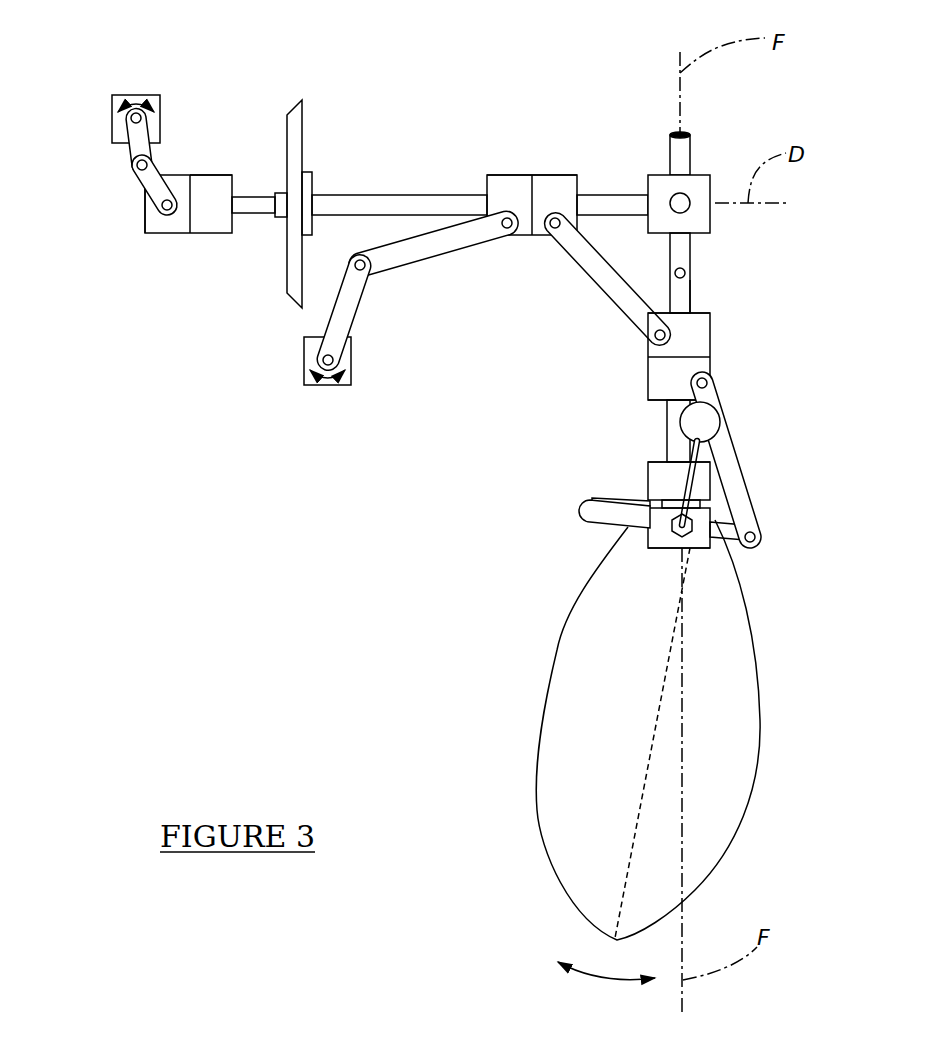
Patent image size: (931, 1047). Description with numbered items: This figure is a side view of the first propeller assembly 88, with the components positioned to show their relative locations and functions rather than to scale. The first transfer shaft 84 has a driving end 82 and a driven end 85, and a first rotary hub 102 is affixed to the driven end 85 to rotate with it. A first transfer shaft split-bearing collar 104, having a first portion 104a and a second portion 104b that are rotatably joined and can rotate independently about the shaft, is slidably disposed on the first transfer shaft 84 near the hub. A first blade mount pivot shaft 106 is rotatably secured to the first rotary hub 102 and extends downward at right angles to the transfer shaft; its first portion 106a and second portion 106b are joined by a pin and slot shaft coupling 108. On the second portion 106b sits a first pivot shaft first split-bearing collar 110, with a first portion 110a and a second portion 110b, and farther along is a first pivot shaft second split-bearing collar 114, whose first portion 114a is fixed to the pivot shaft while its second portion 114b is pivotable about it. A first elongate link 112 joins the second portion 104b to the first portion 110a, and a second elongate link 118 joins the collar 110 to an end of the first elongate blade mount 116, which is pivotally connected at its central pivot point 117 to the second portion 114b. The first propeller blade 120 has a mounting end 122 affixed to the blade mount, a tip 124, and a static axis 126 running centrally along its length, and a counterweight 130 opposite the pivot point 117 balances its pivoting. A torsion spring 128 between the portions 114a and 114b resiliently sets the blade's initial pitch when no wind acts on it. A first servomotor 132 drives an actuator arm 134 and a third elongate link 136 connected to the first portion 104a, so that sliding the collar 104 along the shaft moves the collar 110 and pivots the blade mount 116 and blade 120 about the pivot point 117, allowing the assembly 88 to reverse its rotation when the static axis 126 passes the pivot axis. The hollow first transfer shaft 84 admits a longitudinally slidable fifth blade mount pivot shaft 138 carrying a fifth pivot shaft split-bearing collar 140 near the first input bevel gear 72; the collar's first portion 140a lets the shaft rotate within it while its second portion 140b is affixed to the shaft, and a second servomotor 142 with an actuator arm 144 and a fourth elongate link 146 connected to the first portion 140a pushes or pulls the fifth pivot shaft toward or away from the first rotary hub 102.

The first input bevel gear 72 is at (302, 108).
The driving end 82 is at (283, 193).
The first transfer shaft 84 is at (380, 193).
The driven end 85 is at (620, 195).
The first propeller assembly 88 is at (450, 433).
The first rotary hub 102 is at (700, 175).
The first transfer shaft split-bearing collar 104 is at (531, 146).
The first portion 104a is at (508, 173).
The second portion 104b is at (555, 175).
The first blade mount pivot shaft 106 is at (709, 248).
The first portion 106a is at (690, 258).
The second portion 106b is at (690, 295).
The pin and slot shaft coupling 108 is at (646, 274).
The first pivot shaft first split-bearing collar 110 is at (633, 353).
The first portion 110a is at (710, 333).
The second portion 110b is at (710, 370).
The first elongate link 112 is at (593, 280).
The first pivot shaft second split-bearing collar 114 is at (630, 457).
The first portion 114a is at (650, 490).
The second portion 114b is at (650, 548).
The first elongate blade mount 116 is at (590, 507).
The pivot point 117 is at (690, 548).
The second elongate link 118 is at (720, 400).
The first propeller blade 120 is at (557, 650).
The mounting end 122 is at (596, 539).
The tip 124 is at (573, 939).
The static axis 126 is at (642, 765).
The torsion spring 128 is at (650, 501).
The counterweight 130 is at (667, 422).
The first servomotor 132 is at (325, 385).
The actuator arm 134 is at (360, 303).
The third elongate link 136 is at (397, 268).
The fifth blade mount pivot shaft 138 is at (257, 214).
The fifth pivot shaft split-bearing collar 140 is at (185, 254).
The first portion 140a is at (150, 233).
The second portion 140b is at (217, 233).
The second servomotor 142 is at (137, 95).
The actuator arm 144 is at (128, 150).
The fourth elongate link 146 is at (140, 187).